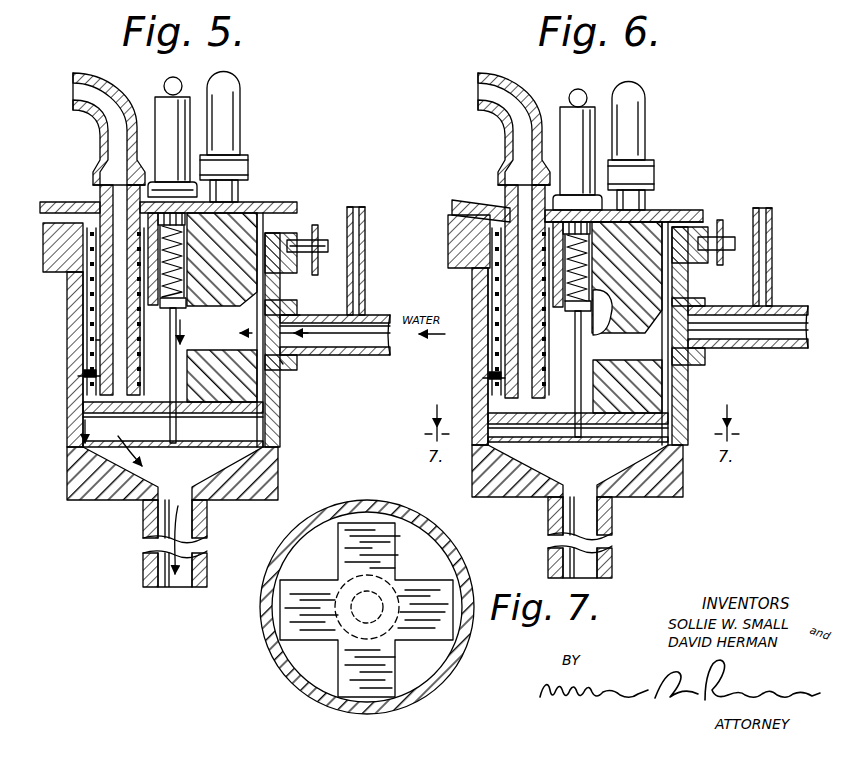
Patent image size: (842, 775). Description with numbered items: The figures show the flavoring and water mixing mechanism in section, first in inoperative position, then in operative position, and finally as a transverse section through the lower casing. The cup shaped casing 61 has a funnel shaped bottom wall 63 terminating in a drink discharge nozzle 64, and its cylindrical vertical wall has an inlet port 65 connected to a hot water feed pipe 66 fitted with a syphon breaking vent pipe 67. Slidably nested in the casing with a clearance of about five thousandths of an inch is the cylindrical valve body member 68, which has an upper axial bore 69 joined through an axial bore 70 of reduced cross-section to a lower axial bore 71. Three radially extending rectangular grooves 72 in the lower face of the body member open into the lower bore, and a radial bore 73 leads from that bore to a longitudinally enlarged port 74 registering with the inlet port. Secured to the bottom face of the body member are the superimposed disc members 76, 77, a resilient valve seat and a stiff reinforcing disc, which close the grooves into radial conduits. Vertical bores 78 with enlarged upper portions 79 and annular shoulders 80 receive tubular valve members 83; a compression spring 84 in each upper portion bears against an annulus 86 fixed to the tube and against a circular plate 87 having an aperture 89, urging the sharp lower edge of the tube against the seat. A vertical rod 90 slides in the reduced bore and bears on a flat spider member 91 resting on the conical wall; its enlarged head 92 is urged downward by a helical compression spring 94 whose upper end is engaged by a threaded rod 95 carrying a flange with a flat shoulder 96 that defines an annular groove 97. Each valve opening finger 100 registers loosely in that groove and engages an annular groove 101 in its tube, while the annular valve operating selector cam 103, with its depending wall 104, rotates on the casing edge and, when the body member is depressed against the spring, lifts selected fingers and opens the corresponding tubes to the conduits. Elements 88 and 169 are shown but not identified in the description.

In FIG. 5, the cup shaped casing 61 is at (280, 380).
In FIG. 6, the cup shaped casing 61 is at (704, 332).
In FIG. 7, the cup shaped casing 61 is at (390, 512).
In FIG. 5, the funnel shaped bottom wall 63 is at (122, 478).
In FIG. 5, the drink discharge nozzle 64 is at (207, 556).
In FIG. 6, the drink discharge nozzle 64 is at (607, 537).
In FIG. 7, the drink discharge nozzle 64 is at (340, 600).
In FIG. 5, the inlet port 65 is at (302, 316).
In FIG. 5, the hot water feed pipe 66 is at (368, 315).
In FIG. 6, the hot water feed pipe 66 is at (753, 306).
In FIG. 5, the syphon breaking vent pipe 67 is at (365, 242).
In FIG. 6, the syphon breaking vent pipe 67 is at (783, 255).
In FIG. 5, the cylindrical valve body member 68 is at (258, 202).
In FIG. 6, the upper axial bore 69 is at (515, 275).
In FIG. 5, the axial bore of reduced cross-section 70 is at (244, 330).
In FIG. 5, the lower axial bore 71 is at (131, 444).
In FIG. 5, the radially extending rectangular grooves 72 is at (90, 397).
In FIG. 5, the radial bore 73 is at (270, 330).
In FIG. 5, the longitudinally enlarged port 74 is at (281, 366).
In FIG. 5, the disc member 76 is at (265, 407).
In FIG. 5, the disc member 77 is at (265, 417).
In FIG. 5, the vertical bores 78 is at (88, 358).
In FIG. 5, the upper portions 79 is at (92, 328).
In FIG. 5, the annular shoulders 80 is at (96, 340).
In FIG. 6, the tubular valve member 83 is at (488, 311).
In FIG. 6, the compression spring 84 is at (491, 309).
In FIG. 6, the annulus 86 is at (471, 359).
In FIG. 6, the circular plate 87 is at (624, 196).
In FIG. 6, the collar 88 is at (631, 184).
In FIG. 6, the aperture 89 is at (459, 241).
In FIG. 6, the vertical rod 90 is at (574, 392).
In FIG. 5, the flat spider member 91 is at (200, 448).
In FIG. 6, the flat spider member 91 is at (578, 456).
In FIG. 7, the flat spider member 91 is at (425, 575).
In FIG. 6, the enlarged head 92 is at (630, 333).
In FIG. 5, the helical compression spring 94 is at (167, 324).
In FIG. 6, the rod 95 is at (577, 149).
In FIG. 6, the flat shoulder 96 is at (628, 146).
In FIG. 5, the annular groove 97 is at (159, 182).
In FIG. 6, the valve opening finger 100 is at (637, 195).
In FIG. 6, the annular groove 101 is at (481, 191).
In FIG. 5, the annular valve operating selector cam 103 is at (42, 202).
In FIG. 5, the depending wall 104 is at (62, 273).
In FIG. 5, the elbow tube 169 is at (106, 73).
In FIG. 6, the elbow tube 169 is at (514, 223).